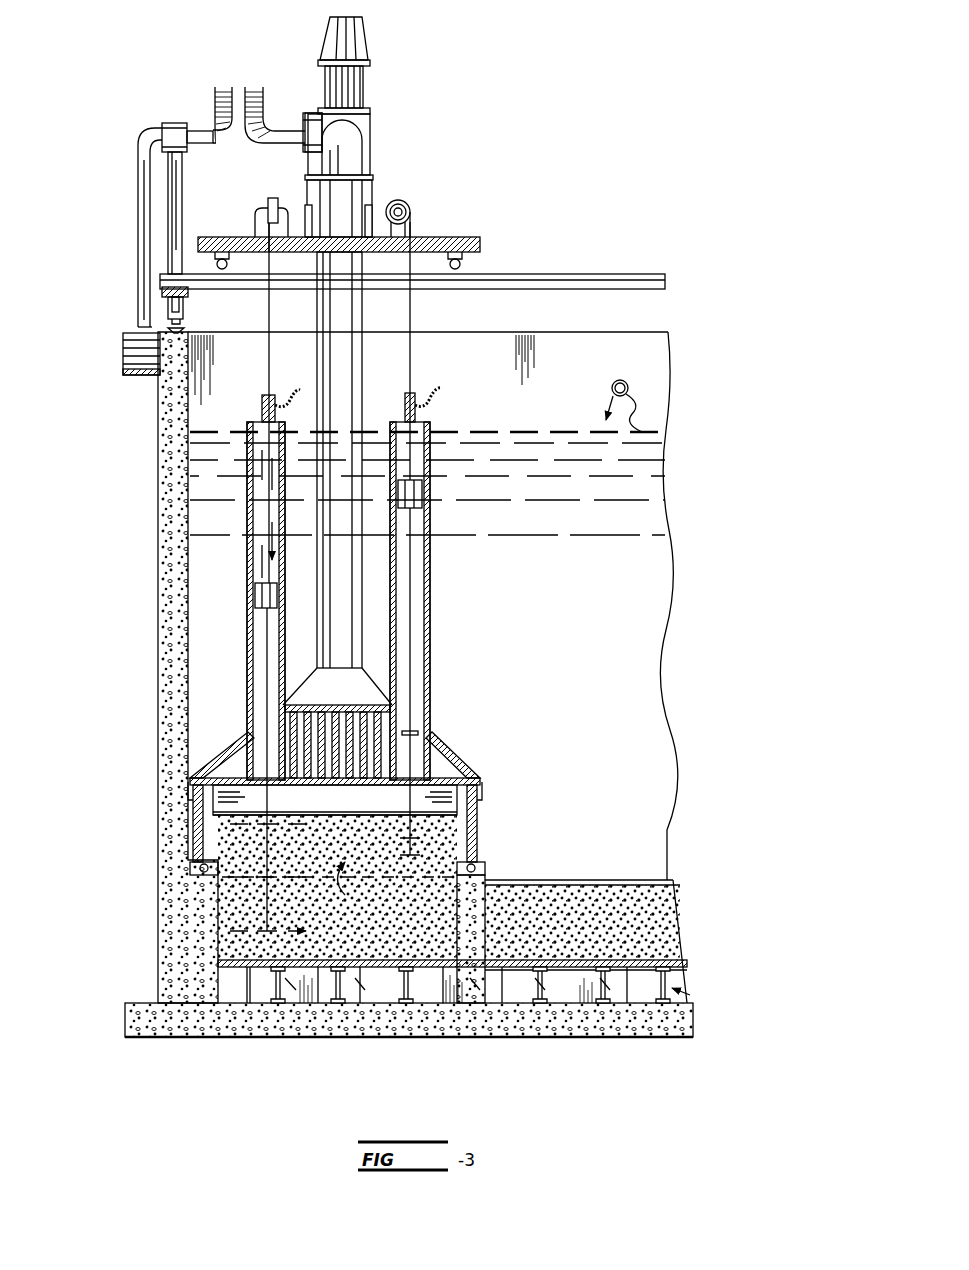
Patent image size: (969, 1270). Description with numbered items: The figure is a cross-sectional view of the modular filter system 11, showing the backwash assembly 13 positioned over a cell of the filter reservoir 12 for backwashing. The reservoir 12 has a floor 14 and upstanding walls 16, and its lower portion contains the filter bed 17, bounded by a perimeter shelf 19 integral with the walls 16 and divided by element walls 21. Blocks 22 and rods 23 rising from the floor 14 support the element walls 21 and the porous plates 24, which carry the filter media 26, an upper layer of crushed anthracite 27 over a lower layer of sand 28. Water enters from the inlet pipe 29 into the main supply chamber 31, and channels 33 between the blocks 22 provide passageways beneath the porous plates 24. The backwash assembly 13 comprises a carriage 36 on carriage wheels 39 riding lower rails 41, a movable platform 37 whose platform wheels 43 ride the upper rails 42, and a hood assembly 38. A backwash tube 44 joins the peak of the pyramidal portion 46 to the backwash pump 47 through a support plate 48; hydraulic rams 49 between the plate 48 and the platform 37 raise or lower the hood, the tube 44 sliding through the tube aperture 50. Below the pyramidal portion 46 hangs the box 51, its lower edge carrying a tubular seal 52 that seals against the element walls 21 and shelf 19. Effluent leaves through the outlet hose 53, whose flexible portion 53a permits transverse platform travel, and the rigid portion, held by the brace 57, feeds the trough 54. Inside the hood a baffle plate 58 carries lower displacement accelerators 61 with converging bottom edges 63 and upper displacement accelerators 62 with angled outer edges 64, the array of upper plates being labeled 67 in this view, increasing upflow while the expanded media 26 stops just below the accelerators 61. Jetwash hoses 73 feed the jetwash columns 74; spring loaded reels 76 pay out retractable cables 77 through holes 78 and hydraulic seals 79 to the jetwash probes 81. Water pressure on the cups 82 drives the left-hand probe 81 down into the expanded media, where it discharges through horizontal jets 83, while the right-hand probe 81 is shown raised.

The modular filter system 11 is at (640, 62).
The filter reservoir 12 is at (120, 668).
The backwash assembly 13 is at (438, 532).
The floor 14 is at (690, 1015).
The upstanding walls 16 is at (158, 445).
The filter bed 17 is at (540, 762).
The perimeter shelf 19 is at (218, 900).
The element walls 21 is at (208, 853).
The blocks 22 is at (345, 1005).
The rods 23 is at (312, 1000).
The porous plates 24 is at (225, 963).
The filter media 26 is at (590, 883).
The crushed anthracite 27 is at (660, 912).
The sand 28 is at (690, 963).
The inlet pipe 29 is at (630, 398).
The main supply chamber 31 is at (640, 508).
The channels 33 is at (680, 994).
The carriage 36 is at (160, 292).
The movable platform 37 is at (452, 245).
The hood assembly 38 is at (455, 728).
The carriage wheels 39 is at (183, 320).
The lower rails 41 is at (148, 320).
The upper rails 42 is at (545, 273).
The platform wheels 43 is at (217, 264).
The backwash tube 44 is at (362, 360).
The pyramidal portion 46 is at (306, 676).
The backwash pump 47 is at (368, 95).
The support plate 48 is at (370, 158).
The hydraulic rams 49 is at (370, 210).
The tube aperture 50 is at (372, 258).
The box 51 is at (480, 878).
The tubular seal 52 is at (195, 870).
The outlet hose 53 is at (138, 200).
The flexible extensible hose portion 53a is at (218, 108).
The trough 54 is at (123, 355).
The brace 57 is at (182, 185).
The baffle plate 58 is at (190, 780).
The lower displacement accelerators 61 is at (213, 798).
The upper displacement accelerators 62 is at (348, 740).
The bottom edges 63 is at (467, 838).
The outer edges 64 is at (200, 762).
The fins 67 is at (305, 752).
The jetwash hoses 73 is at (442, 388).
The jetwash columns 74 is at (247, 497).
The spring loaded reels 76 is at (265, 198).
The retractable cable 77 is at (269, 360).
The hole 78 is at (278, 252).
The hydraulic seal 79 is at (262, 400).
The jetwash probe 81 is at (267, 642).
The cups 82 is at (255, 593).
The horizontal jets 83 is at (415, 735).